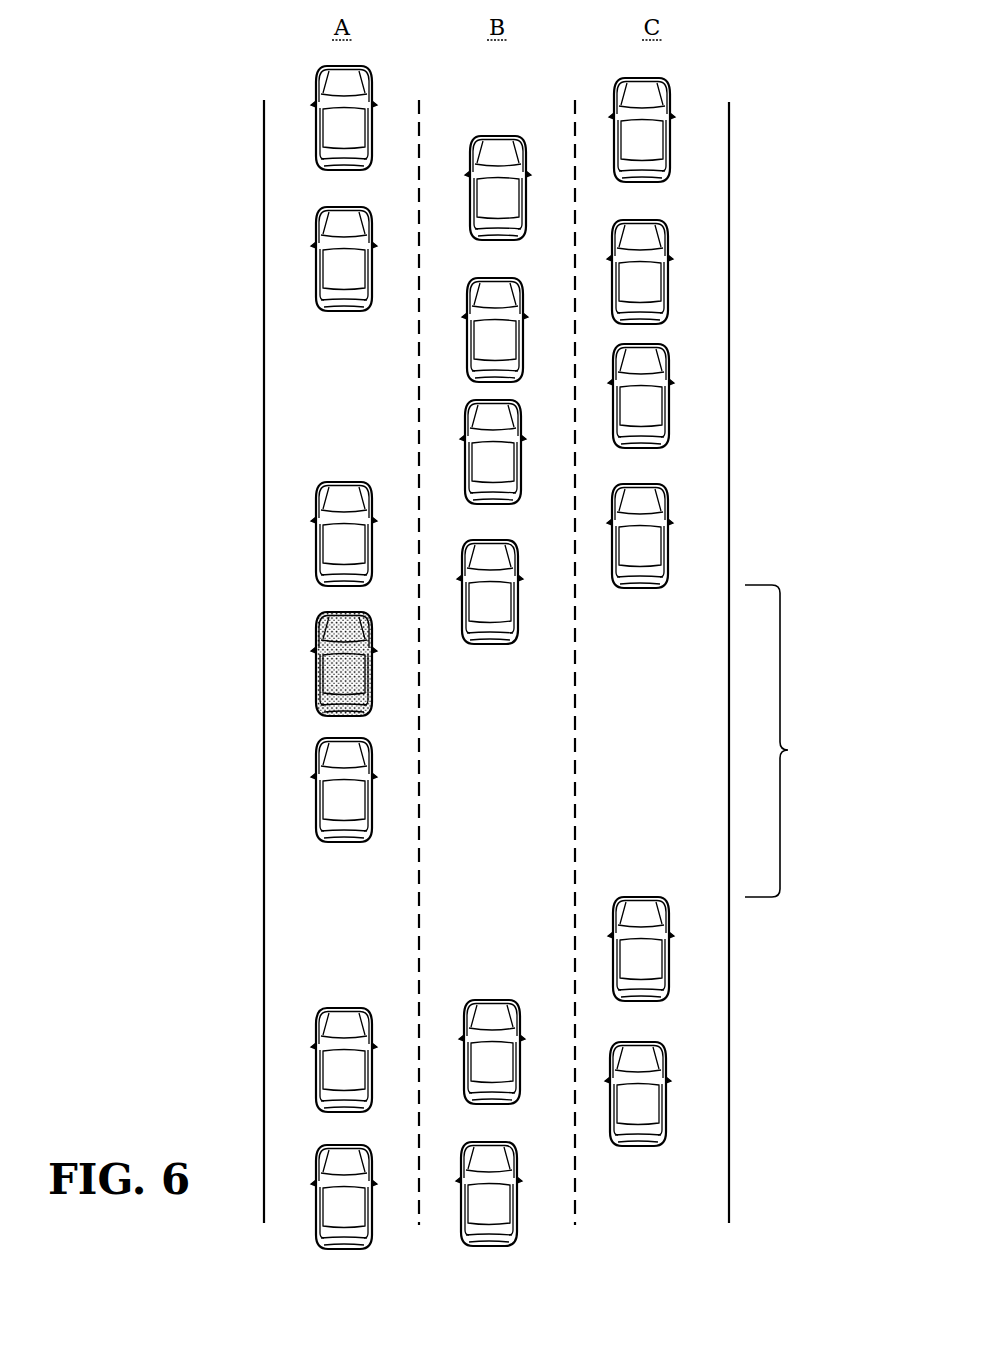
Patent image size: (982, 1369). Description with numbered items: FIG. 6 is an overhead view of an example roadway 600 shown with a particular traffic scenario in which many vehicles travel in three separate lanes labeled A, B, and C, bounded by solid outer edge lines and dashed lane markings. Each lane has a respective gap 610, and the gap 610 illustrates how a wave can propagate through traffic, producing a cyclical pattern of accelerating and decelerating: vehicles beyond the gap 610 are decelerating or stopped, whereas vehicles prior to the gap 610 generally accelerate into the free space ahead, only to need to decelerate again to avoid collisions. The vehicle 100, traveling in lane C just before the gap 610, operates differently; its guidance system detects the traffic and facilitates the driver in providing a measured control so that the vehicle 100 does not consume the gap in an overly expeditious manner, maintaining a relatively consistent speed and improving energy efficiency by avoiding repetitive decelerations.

The roadway 600 is at (213, 209).
The gap 610 is at (788, 750).
The vehicle 100 is at (668, 980).